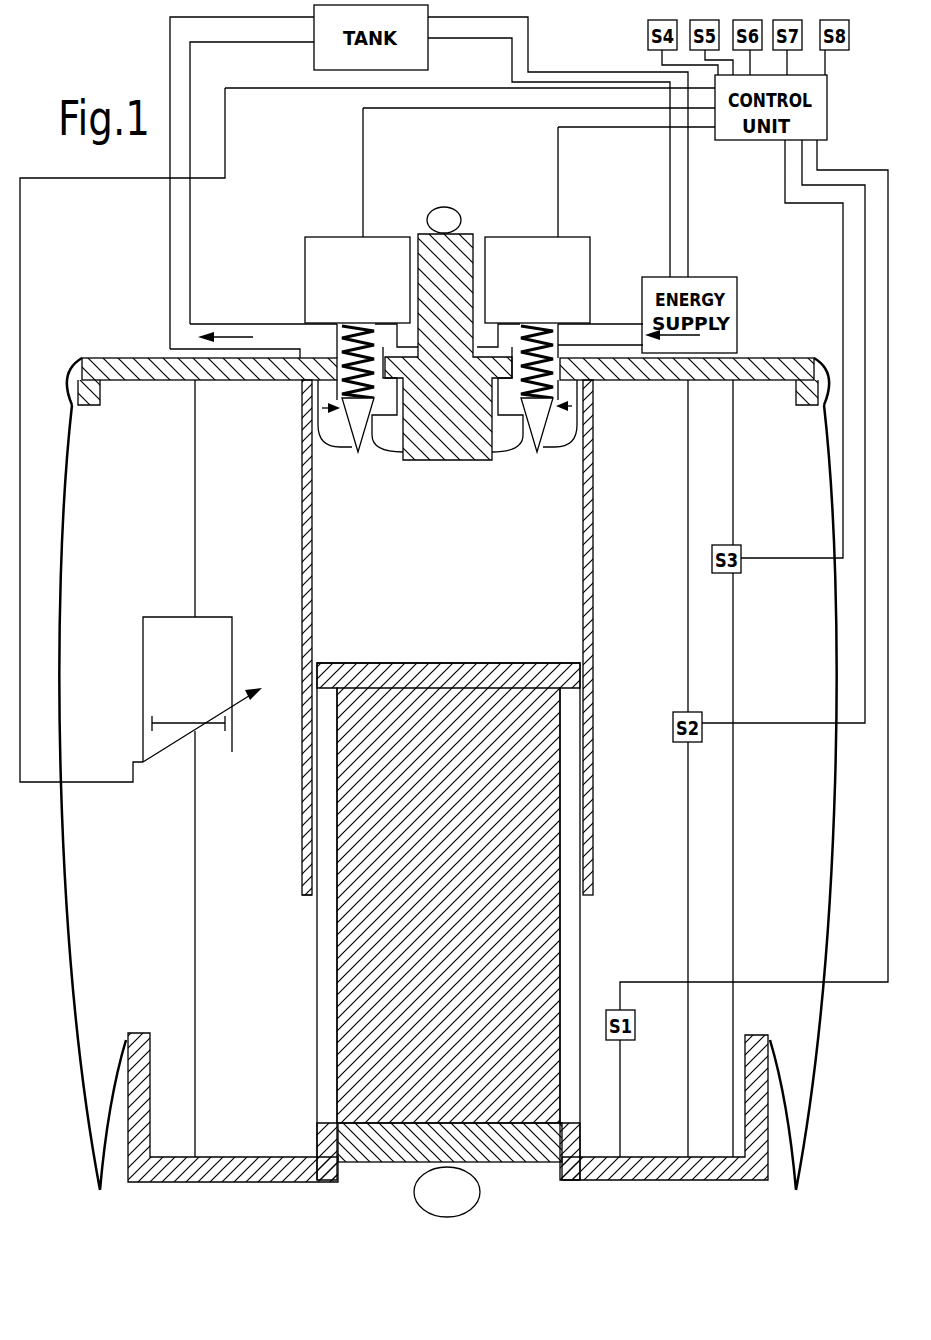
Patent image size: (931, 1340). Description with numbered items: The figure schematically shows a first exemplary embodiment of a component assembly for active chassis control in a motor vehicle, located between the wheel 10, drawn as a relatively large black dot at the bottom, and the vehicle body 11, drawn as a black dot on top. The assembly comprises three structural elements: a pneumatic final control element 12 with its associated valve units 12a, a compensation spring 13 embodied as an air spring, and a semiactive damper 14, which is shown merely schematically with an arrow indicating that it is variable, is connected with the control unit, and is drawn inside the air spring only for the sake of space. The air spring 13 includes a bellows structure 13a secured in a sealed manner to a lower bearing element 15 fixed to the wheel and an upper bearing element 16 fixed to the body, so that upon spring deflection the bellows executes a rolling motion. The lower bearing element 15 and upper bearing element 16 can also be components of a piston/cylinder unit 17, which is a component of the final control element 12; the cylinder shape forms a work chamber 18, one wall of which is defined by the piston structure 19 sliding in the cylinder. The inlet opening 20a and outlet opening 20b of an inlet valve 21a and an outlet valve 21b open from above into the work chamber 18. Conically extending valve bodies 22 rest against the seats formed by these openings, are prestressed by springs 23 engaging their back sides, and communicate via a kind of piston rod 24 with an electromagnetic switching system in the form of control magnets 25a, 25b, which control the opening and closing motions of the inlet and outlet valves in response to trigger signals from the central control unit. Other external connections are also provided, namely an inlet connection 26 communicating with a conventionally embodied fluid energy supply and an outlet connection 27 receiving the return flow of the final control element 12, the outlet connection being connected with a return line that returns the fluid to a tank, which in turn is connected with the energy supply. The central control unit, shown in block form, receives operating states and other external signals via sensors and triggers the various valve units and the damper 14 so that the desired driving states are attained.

The wheel 10 is at (465, 1216).
The vehicle body 11 is at (443, 205).
The final control element 12 is at (540, 582).
The valve units 12a is at (559, 225).
The compensation spring 13 is at (781, 420).
The bellows structure 13a is at (302, 600).
The semiactive damper 14 is at (144, 600).
The lower bearing element 15 is at (595, 1165).
The upper bearing element 16 is at (782, 358).
The piston/cylinder unit 17 is at (296, 822).
The work chamber 18 is at (545, 505).
The piston structure 19 is at (575, 820).
The inlet opening 20a is at (560, 450).
The outlet opening 20b is at (345, 460).
The inlet valve 21a is at (572, 404).
The outlet valve 21b is at (315, 403).
The valve bodies 22 is at (555, 417).
The springs 23 is at (337, 386).
The piston rod 24 is at (320, 330).
The control magnet 25a is at (508, 250).
The control magnet 25b is at (322, 250).
The inlet connection 26 is at (618, 340).
The outlet connection 27 is at (280, 347).